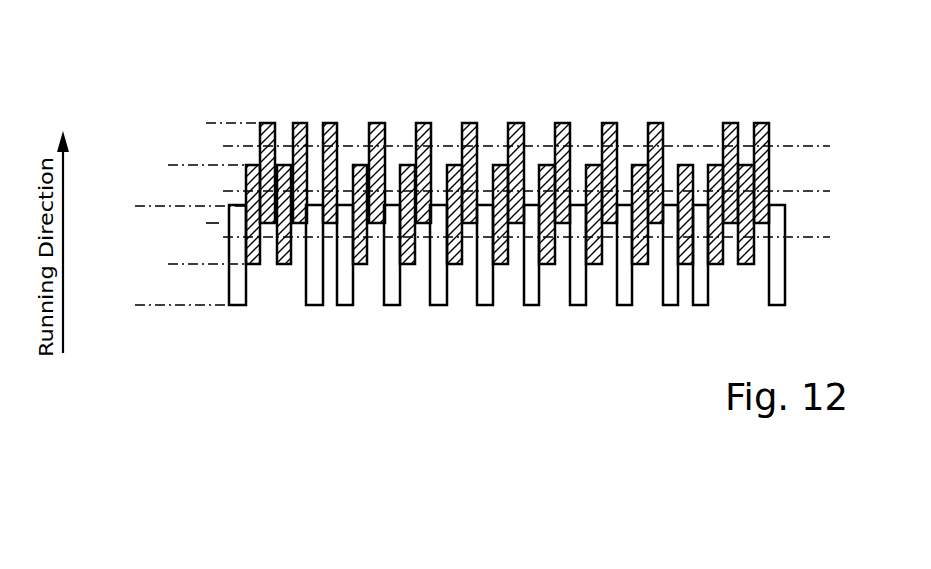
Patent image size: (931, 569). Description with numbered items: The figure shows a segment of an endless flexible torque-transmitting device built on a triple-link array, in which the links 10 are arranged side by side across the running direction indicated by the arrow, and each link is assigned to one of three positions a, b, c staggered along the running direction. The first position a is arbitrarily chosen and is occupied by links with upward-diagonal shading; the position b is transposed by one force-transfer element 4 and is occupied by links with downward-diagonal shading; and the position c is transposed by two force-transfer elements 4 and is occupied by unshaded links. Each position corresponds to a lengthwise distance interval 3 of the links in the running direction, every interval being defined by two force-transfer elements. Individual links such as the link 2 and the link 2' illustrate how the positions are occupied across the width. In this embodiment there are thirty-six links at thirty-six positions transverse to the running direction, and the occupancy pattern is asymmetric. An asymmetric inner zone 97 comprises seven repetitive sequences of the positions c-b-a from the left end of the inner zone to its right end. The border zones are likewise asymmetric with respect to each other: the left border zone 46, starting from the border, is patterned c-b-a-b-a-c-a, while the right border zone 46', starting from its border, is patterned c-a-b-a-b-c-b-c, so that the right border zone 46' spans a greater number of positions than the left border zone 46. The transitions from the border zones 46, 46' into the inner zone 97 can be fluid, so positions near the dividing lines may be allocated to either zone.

The link 2 is at (374, 141).
The link 2' is at (660, 141).
The lengthwise distance interval 3 is at (384, 310).
The force-transfer element 4 is at (582, 145).
The links 10 is at (438, 217).
The left border zone 46 is at (289, 128).
The right border zone 46' is at (747, 128).
The inner zone 97 is at (540, 101).
The position a is at (206, 123).
The position b is at (168, 165).
The position c is at (135, 206).